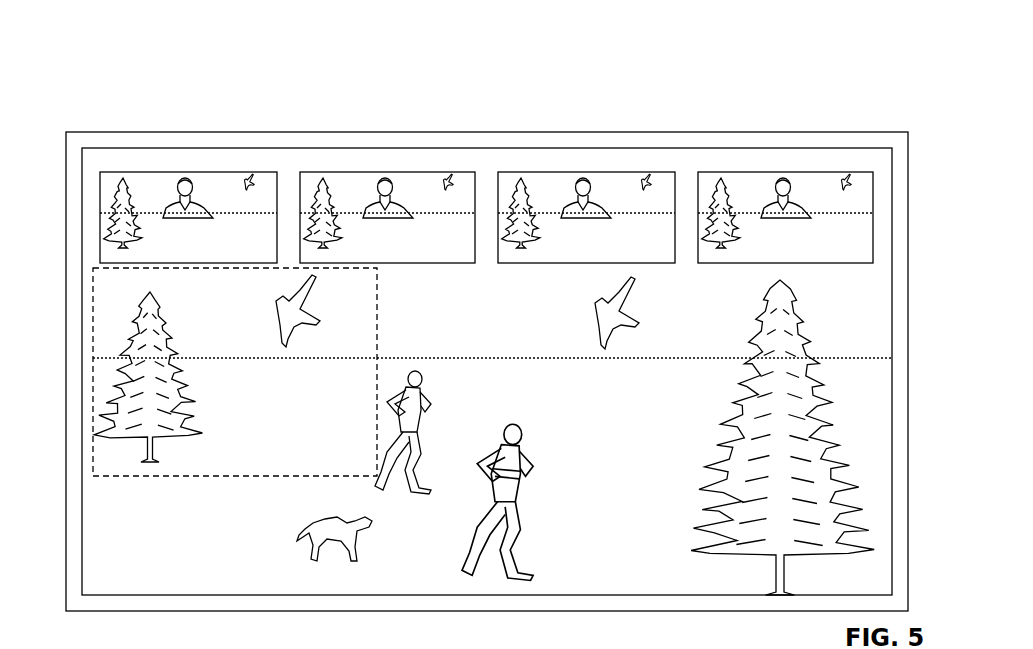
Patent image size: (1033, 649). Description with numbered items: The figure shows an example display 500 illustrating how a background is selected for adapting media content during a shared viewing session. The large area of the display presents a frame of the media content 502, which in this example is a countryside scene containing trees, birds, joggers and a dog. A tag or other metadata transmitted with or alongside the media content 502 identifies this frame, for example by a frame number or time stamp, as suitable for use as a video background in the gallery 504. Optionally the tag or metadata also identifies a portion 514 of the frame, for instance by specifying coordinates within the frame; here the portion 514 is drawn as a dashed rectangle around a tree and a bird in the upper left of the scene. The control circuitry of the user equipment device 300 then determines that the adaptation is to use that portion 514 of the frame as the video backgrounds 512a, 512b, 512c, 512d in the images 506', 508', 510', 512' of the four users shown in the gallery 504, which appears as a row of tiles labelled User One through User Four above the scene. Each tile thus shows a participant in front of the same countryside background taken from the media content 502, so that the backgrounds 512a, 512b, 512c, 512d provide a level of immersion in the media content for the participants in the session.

The display view 500 is at (118, 38).
The media content 502 is at (848, 349).
The gallery 504 is at (96, 203).
The image of user 506' is at (175, 141).
The image of user 508' is at (381, 141).
The image of user 510' is at (574, 141).
The image of user 512' is at (774, 141).
The video background 512a is at (112, 178).
The video background 512b is at (324, 176).
The video background 512c is at (517, 176).
The video background 512d is at (713, 178).
The portion of the frame 514 is at (107, 478).
The user equipment device 300 is at (98, 648).